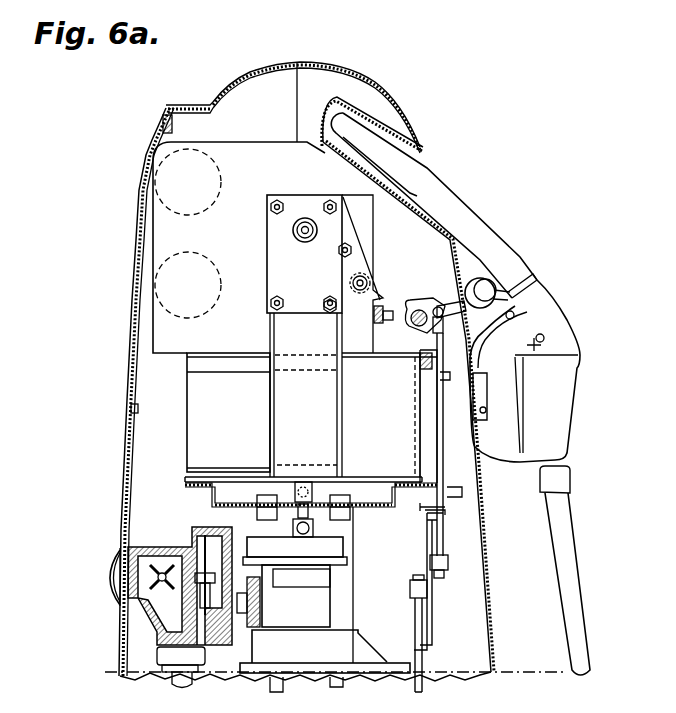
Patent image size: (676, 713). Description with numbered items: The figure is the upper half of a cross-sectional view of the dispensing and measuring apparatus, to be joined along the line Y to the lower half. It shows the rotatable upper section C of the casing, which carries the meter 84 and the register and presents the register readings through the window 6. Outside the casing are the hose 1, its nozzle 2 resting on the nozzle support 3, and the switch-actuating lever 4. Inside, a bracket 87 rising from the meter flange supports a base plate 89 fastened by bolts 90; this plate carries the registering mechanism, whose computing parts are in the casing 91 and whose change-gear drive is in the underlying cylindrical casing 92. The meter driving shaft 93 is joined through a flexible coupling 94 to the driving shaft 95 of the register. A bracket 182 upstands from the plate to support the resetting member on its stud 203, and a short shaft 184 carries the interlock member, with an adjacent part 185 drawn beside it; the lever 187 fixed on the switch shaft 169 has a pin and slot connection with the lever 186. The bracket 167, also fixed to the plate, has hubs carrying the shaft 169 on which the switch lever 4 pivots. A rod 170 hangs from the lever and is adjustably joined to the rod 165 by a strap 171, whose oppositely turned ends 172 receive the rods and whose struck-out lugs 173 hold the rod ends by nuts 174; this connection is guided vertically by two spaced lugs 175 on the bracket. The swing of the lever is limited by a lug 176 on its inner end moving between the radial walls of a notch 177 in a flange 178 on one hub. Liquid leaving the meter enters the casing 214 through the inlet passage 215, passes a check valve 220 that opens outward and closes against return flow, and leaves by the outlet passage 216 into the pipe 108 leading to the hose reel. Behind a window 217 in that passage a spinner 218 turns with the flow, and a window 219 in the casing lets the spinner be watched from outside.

The hose 1 is at (577, 592).
The nozzle 2 is at (562, 320).
The nozzle support 3 is at (481, 392).
The switch-actuating lever 4 is at (486, 287).
The window 6 is at (136, 277).
The meter 84 is at (325, 669).
The bracket 87 is at (355, 510).
The base plate 89 is at (223, 504).
The bolts 90 is at (342, 497).
The casing of registering mechanism 91 is at (239, 247).
The cylindrical casing 92 is at (228, 412).
The meter driving shaft 93 is at (315, 528).
The flexible coupling 94 is at (283, 478).
The driving shaft of the registering mechanism 95 is at (290, 506).
The pipe 108 is at (175, 679).
The rod 165 is at (423, 682).
The bracket 167 is at (428, 437).
The shaft 169 is at (418, 326).
The rod 170 is at (446, 507).
The strap 171 is at (433, 613).
The oppositely turned ends 172 is at (442, 514).
The lugs 173 is at (448, 562).
The nuts 174 is at (446, 572).
The lugs 175 is at (445, 385).
The lug 176 is at (412, 326).
The notch 177 is at (410, 308).
The flange 178 is at (421, 311).
The bracket 182 is at (325, 348).
The short shaft 184 is at (353, 281).
The bearing 185 is at (352, 278).
The lever 186 is at (373, 314).
The lever 187 is at (377, 330).
The stud 203 is at (305, 228).
The casing 214 is at (162, 624).
The inlet passage 215 is at (227, 607).
The outlet passage 216 is at (173, 609).
The window 217 is at (118, 560).
The spinner 218 is at (158, 566).
The window 219 is at (105, 574).
The check valve 220 is at (210, 578).
The upper section C is at (121, 489).
The line y—y Y is at (302, 673).